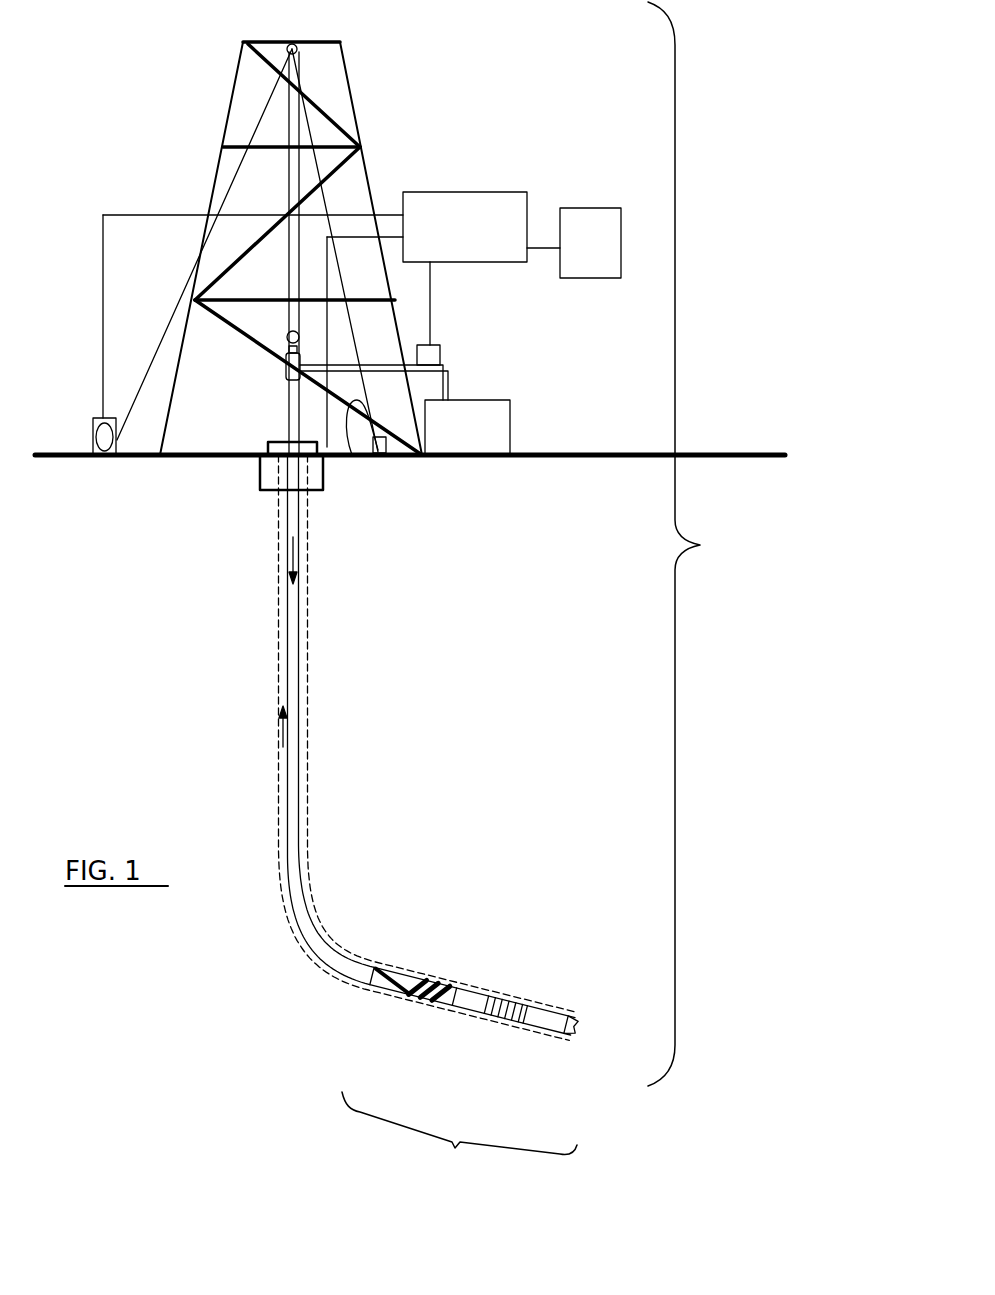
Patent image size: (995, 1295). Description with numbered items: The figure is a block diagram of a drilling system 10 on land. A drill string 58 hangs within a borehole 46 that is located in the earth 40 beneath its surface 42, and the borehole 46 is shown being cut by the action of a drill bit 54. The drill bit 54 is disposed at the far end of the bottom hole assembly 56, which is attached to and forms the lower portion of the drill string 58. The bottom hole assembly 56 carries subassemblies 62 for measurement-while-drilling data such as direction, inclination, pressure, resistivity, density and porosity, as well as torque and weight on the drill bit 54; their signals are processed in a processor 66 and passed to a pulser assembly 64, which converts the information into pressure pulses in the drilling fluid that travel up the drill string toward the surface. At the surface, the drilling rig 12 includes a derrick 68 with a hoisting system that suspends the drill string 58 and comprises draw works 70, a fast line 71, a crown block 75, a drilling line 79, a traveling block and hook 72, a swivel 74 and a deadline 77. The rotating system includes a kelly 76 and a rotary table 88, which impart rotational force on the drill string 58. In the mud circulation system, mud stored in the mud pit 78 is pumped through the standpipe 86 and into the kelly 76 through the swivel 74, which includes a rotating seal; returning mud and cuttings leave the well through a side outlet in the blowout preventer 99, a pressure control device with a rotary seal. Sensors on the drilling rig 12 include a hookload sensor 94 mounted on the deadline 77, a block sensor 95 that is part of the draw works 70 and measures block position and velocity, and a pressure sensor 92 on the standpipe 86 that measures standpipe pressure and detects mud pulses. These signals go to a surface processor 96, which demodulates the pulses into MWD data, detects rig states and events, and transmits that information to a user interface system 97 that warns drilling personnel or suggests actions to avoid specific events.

The drilling system 10 is at (700, 544).
The drilling rig 12 is at (148, 88).
The earth 40 is at (459, 596).
The surface 42 is at (563, 458).
The borehole 46 is at (278, 598).
The drill bit 54 is at (582, 1022).
The bottom hole assembly 56 is at (459, 1141).
The drill string 58 is at (299, 597).
The subassemblies 62 is at (511, 1003).
The pulser assembly 64 is at (396, 992).
The processor 66 is at (428, 993).
The derrick 68 is at (363, 147).
The draw works 70 is at (93, 432).
The fast line 71 is at (160, 333).
The traveling block and hook 72 is at (286, 338).
The swivel 74 is at (288, 372).
The crown block 75 is at (291, 43).
The kelly 76 is at (287, 415).
The deadline 77 is at (350, 458).
The mud pit 78 is at (452, 444).
The drilling line 79 is at (286, 177).
The standpipe 86 is at (449, 372).
The rotary table 88 is at (263, 449).
The pressure sensor 92 is at (430, 345).
The hookload sensor 94 is at (400, 458).
The block sensor 95 is at (116, 460).
The surface processor 96 is at (445, 236).
The user interface system 97 is at (575, 269).
The blowout preventer 99 is at (261, 490).